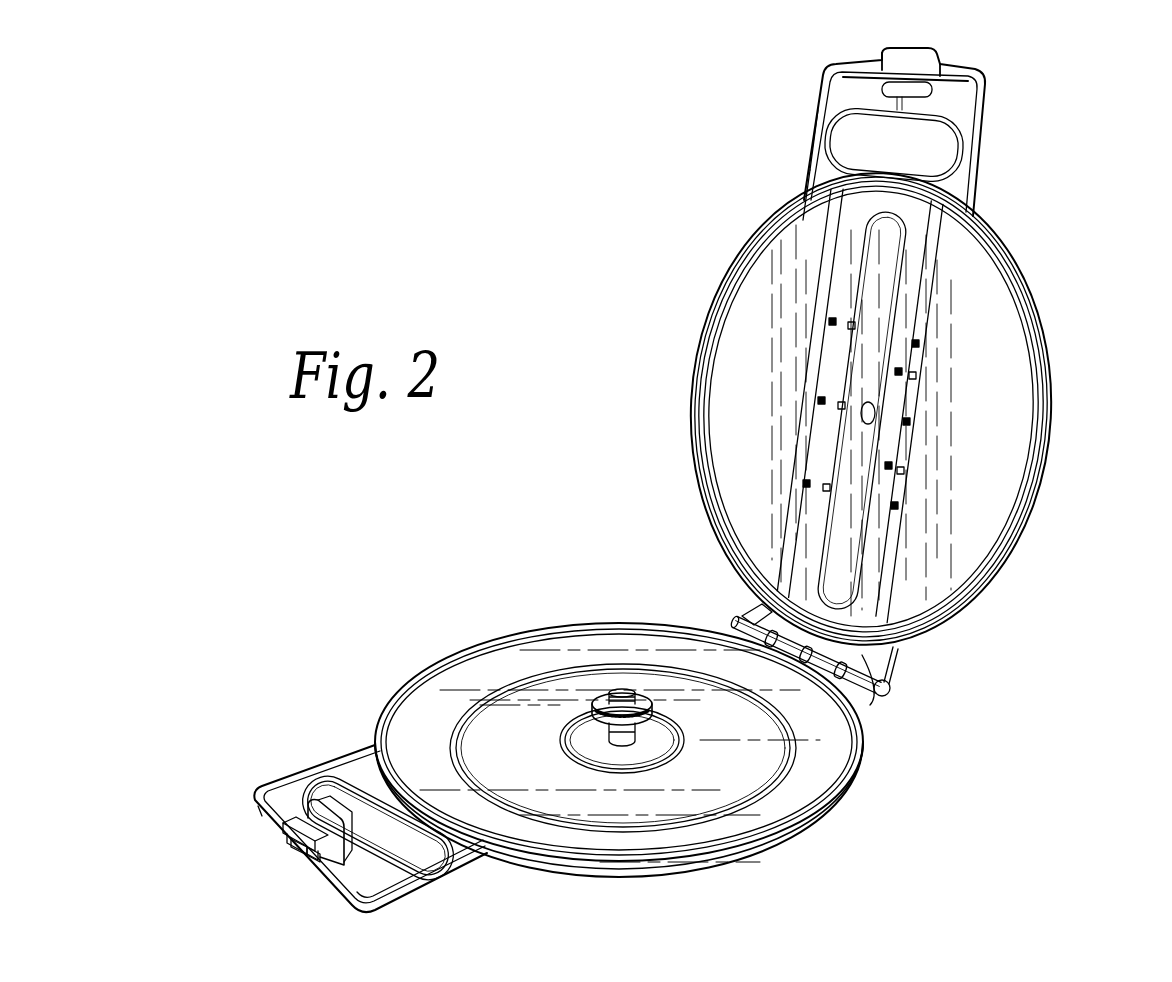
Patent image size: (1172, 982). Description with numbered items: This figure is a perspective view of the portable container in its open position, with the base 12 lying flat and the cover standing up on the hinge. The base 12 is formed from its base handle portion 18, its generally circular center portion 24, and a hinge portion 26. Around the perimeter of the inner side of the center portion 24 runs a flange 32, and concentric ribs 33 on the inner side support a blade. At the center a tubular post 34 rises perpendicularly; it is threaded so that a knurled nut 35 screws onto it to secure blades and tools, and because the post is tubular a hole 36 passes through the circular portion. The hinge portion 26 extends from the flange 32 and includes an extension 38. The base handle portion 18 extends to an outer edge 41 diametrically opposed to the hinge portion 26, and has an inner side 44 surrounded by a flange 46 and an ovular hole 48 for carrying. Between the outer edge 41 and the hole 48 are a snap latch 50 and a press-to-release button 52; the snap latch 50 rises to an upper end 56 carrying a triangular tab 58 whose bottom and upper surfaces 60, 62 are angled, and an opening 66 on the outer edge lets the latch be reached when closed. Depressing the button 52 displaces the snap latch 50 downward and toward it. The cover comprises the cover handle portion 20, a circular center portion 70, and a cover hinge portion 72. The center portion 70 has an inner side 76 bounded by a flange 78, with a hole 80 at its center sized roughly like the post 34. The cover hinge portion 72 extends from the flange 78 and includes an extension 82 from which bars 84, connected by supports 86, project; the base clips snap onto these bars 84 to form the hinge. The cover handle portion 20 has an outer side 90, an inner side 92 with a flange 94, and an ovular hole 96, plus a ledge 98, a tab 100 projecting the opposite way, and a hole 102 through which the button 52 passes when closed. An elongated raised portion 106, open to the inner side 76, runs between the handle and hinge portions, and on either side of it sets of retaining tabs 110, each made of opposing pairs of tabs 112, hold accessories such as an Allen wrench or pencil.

The base 12 is at (864, 790).
The base handle portion 18 is at (385, 880).
The cover handle portion 20 is at (975, 105).
The center portion 24 is at (730, 832).
The hinge portion 26 is at (867, 700).
The flange 32 is at (670, 870).
The concentric ribs 33 is at (680, 756).
The tubular post 34 is at (682, 714).
The nut 35 is at (594, 708).
The hole 36 is at (625, 692).
The extension 38 is at (740, 632).
The outer edge 41 is at (258, 815).
The inner side 44 is at (455, 868).
The flange 46 is at (483, 862).
The ovular hole 48 is at (348, 780).
The snap latch 50 is at (315, 853).
The press-to-release button 52 is at (305, 820).
The upper end 56 is at (300, 818).
The triangular tab 58 is at (372, 845).
The bottom surface 60 is at (297, 840).
The upper surface 62 is at (312, 834).
The opening 66 is at (288, 834).
The center portion 70 is at (995, 320).
The cover hinge portion 72 is at (890, 664).
The inner side 76 is at (1048, 415).
The flange 78 is at (871, 409).
The hole 80 is at (875, 412).
The extension 82 is at (757, 605).
The bars 84 is at (890, 690).
The supports 86 is at (862, 660).
The outer side 90 is at (982, 122).
The inner side 92 is at (835, 125).
The flange 94 is at (813, 140).
The ovular hole 96 is at (962, 152).
The ledge 98 is at (945, 72).
The tab 100 is at (885, 58).
The hole 102 is at (845, 94).
The raised portion 106 is at (915, 255).
The retaining tabs 110 is at (915, 373).
The tabs 112 is at (832, 400).